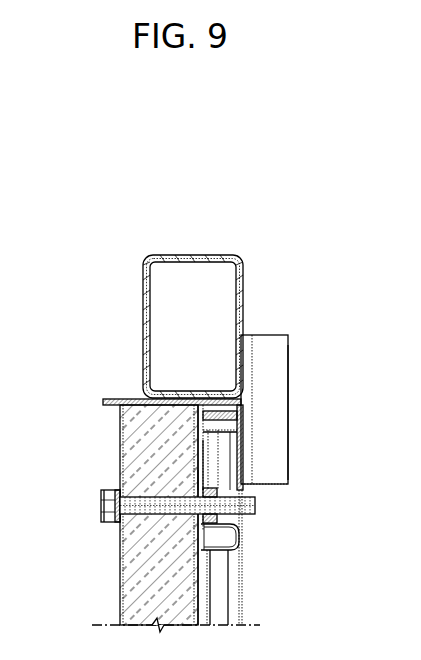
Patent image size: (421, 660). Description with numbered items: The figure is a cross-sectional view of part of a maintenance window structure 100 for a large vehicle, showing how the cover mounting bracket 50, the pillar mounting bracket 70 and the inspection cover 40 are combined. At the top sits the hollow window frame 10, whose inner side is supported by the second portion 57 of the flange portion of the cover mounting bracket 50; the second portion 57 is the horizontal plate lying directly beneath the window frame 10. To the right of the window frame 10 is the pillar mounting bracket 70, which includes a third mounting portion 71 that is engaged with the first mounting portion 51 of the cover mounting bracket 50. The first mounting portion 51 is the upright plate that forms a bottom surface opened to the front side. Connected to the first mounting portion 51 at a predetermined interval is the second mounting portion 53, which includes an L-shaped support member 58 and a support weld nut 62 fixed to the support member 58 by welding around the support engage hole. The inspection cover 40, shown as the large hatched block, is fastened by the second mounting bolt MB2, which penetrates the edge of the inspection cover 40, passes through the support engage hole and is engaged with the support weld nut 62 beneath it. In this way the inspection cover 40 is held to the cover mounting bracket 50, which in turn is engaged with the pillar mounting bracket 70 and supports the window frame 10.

The maintenance window structure 100 is at (200, 203).
The window frame 10 is at (143, 283).
The pillar mounting bracket 70 is at (296, 350).
The third mounting portion 71 is at (290, 373).
The second portion 57 is at (103, 400).
The inspection cover 40 is at (140, 594).
The cover mounting bracket 50 is at (243, 452).
The first mounting portion 51 is at (245, 470).
The support member 58 is at (200, 462).
The second mounting portion 53 is at (197, 486).
The second mounting bolt MB2 is at (101, 513).
The support weld nut 62 is at (217, 521).